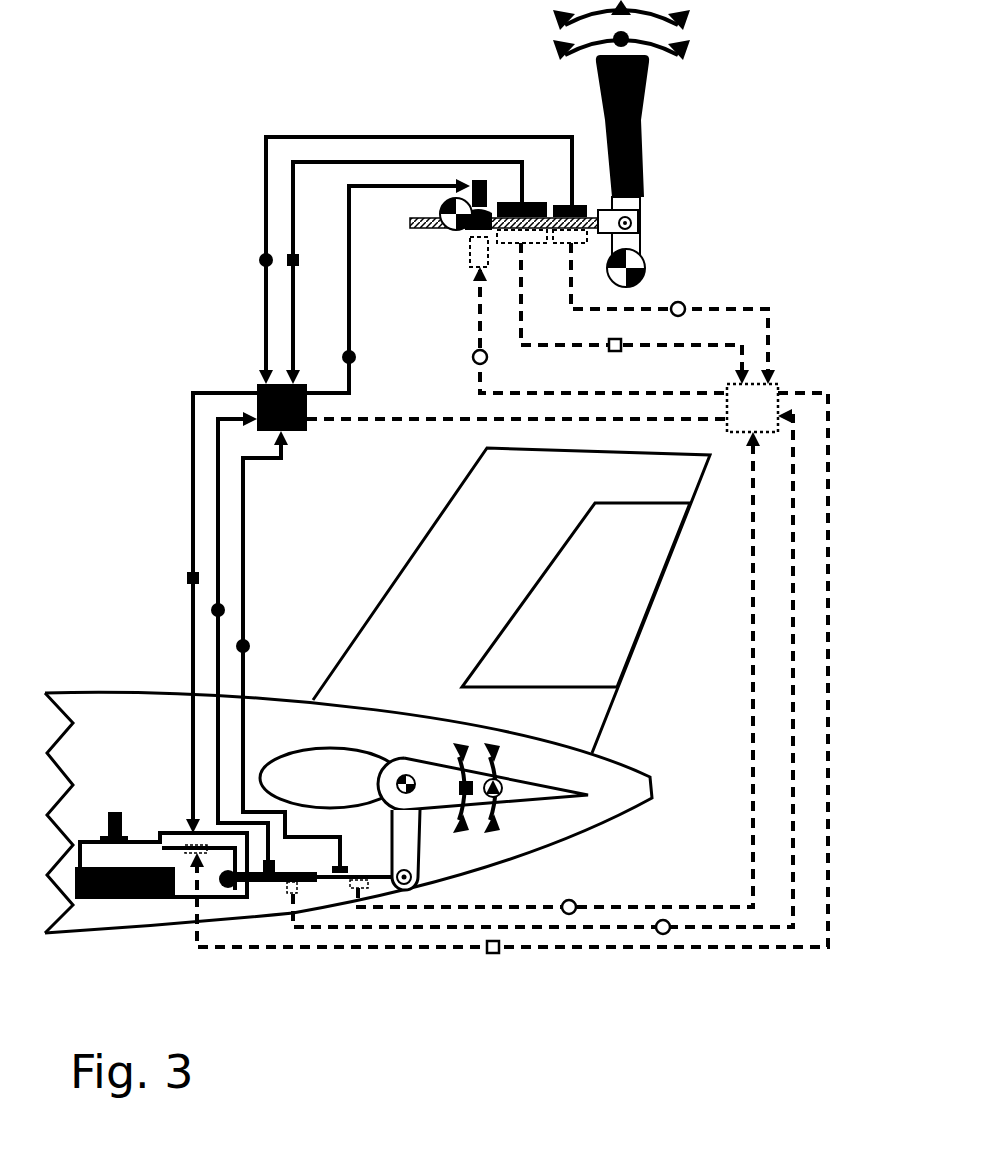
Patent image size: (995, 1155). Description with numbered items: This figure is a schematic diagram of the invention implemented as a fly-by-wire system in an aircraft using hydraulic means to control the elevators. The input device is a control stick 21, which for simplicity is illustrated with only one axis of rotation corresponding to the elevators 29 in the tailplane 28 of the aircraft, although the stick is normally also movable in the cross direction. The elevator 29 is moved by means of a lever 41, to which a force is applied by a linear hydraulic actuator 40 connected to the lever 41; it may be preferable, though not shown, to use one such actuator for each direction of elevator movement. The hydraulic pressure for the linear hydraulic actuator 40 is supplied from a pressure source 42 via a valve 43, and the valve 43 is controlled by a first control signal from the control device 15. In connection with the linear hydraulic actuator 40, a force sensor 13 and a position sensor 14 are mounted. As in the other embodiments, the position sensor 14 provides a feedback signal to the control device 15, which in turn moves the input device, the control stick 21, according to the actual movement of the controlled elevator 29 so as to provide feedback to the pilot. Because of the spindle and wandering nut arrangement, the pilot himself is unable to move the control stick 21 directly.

The force sensor 13 is at (288, 837).
The position sensor 14 is at (340, 866).
The control device 15 is at (257, 388).
The control stick 21 is at (647, 152).
The tailplane 28 is at (362, 752).
The elevators 29 is at (563, 787).
The linear hydraulic actuator 40 is at (418, 857).
The lever 41 is at (258, 882).
The pressure source 42 is at (130, 899).
The valve 43 is at (190, 827).